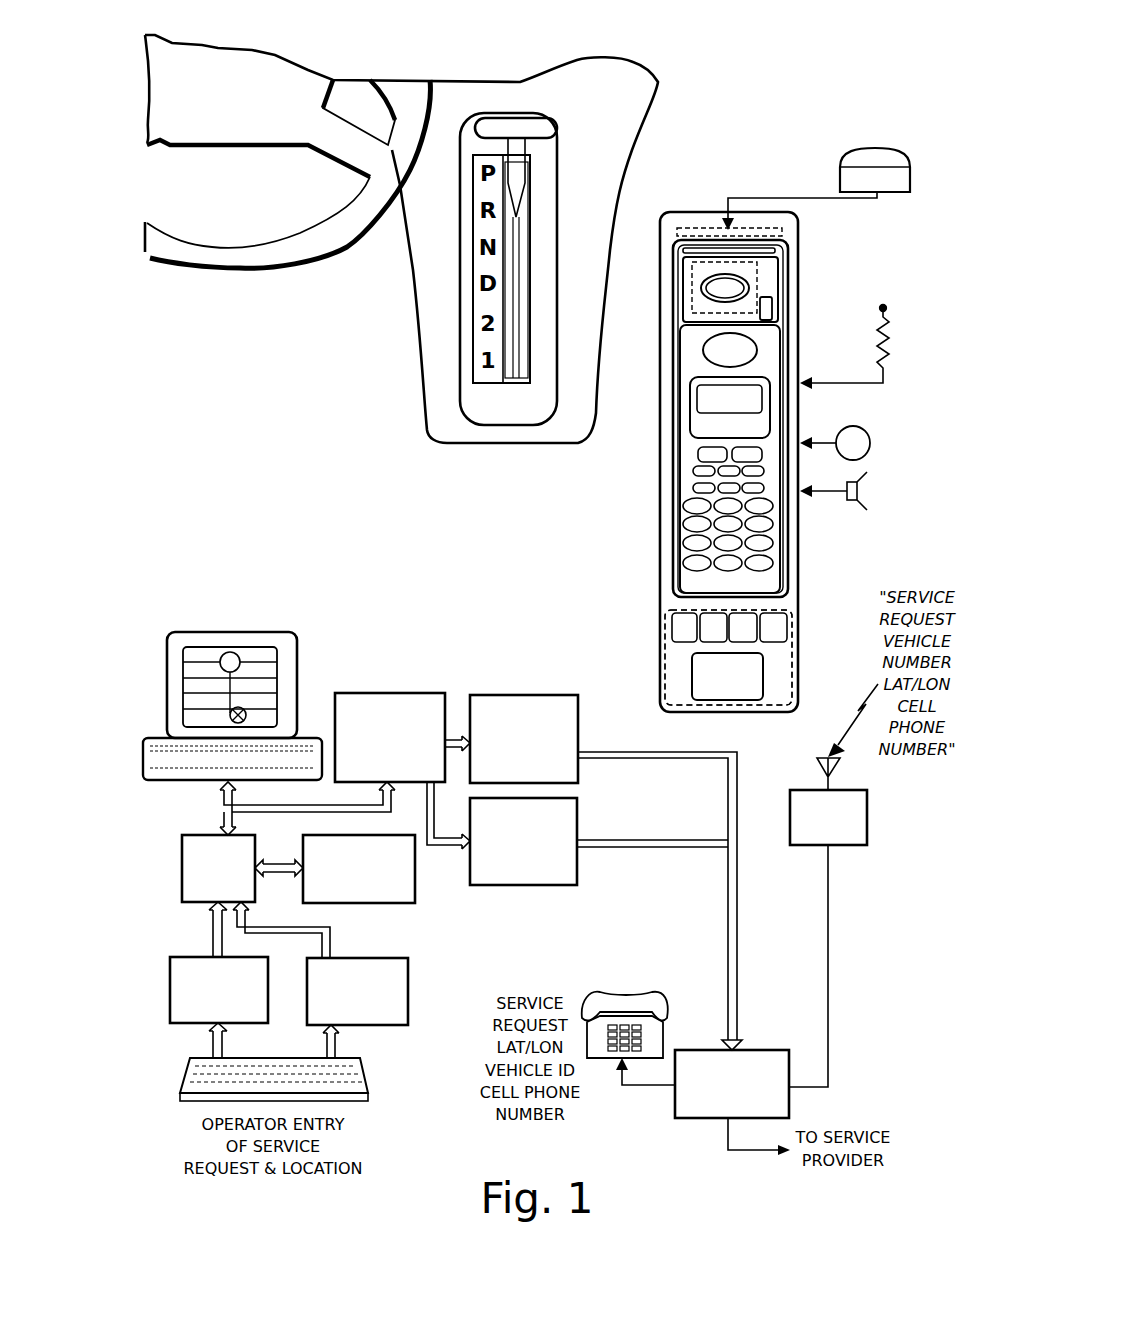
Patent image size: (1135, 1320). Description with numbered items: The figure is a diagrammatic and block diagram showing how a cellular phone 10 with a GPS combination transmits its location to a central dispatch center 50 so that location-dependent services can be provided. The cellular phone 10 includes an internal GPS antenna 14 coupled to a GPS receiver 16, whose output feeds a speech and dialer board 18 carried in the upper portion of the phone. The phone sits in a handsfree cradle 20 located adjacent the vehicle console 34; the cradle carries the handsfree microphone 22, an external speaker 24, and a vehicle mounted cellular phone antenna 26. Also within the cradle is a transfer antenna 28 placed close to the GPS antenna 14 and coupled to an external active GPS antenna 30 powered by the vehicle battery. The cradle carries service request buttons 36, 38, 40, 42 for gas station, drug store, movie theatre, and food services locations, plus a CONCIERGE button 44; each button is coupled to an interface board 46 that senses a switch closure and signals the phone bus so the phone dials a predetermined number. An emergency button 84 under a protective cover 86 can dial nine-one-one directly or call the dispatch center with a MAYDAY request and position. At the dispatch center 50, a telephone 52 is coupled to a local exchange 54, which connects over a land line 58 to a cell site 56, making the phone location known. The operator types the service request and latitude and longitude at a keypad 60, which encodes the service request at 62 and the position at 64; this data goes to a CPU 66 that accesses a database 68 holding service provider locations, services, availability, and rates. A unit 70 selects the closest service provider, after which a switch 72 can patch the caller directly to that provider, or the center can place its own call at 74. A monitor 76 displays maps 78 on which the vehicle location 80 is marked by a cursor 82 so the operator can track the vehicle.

The cellular phone 10 is at (666, 504).
The internal GPS antenna 14 is at (768, 253).
The GPS receiver 16 is at (772, 291).
The speech and dialer board 18 is at (695, 302).
The handsfree cradle 20 is at (660, 540).
The handsfree microphone 22 is at (850, 427).
The external speaker 24 is at (851, 502).
The vehicle mounted cellular phone antenna 26 is at (844, 347).
The transfer antenna 28 is at (782, 233).
The external active GPS antenna 30 is at (923, 148).
The vehicle console 34 is at (604, 197).
The service request button 36 is at (668, 620).
The service request button 38 is at (710, 612).
The service request button 40 is at (747, 612).
The service request button 42 is at (788, 630).
The CONCIERGE button 44 is at (766, 673).
The interface board 46 is at (792, 684).
The dispatch center 50 is at (489, 625).
The telephone 52 is at (657, 995).
The local exchange 54 is at (778, 1050).
The cell site 56 is at (867, 806).
The land line 58 is at (829, 930).
The keypad 60 is at (368, 1068).
The service request encoding 62 is at (170, 965).
The position encoding 64 is at (408, 970).
The CPU 66 is at (182, 890).
The database 68 is at (415, 870).
The closest service provider selecting unit 70 is at (427, 693).
The switch 72 is at (565, 695).
The dispatch call 74 is at (577, 862).
The monitor 76 is at (203, 632).
The maps 78 is at (258, 660).
The vehicle location 80 is at (246, 710).
The cursor 82 is at (240, 707).
The emergency button 84 is at (733, 307).
The protective cover 86 is at (717, 275).